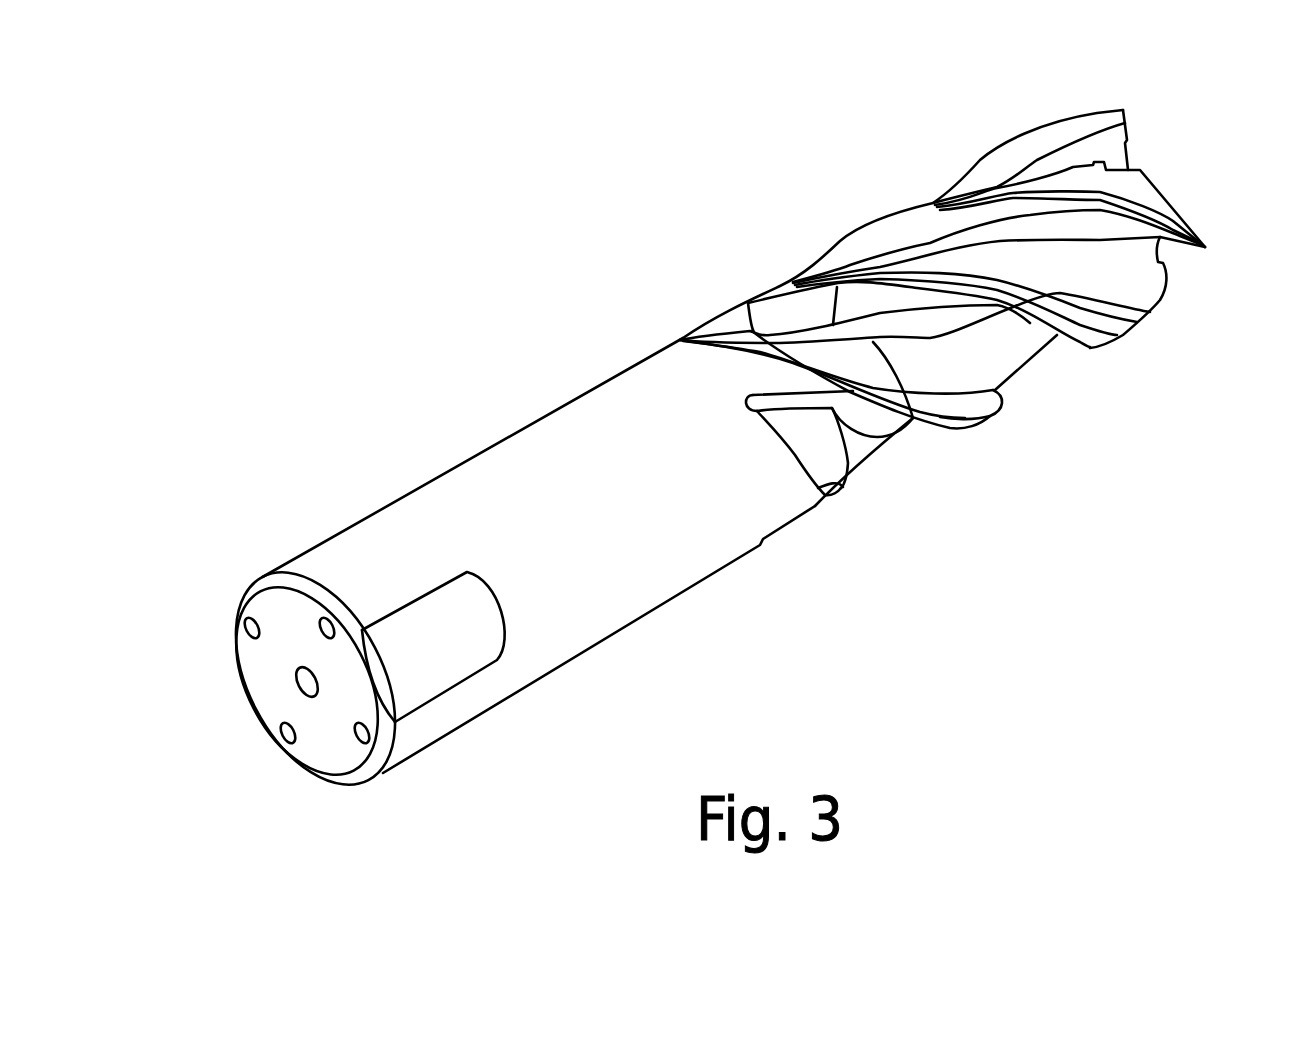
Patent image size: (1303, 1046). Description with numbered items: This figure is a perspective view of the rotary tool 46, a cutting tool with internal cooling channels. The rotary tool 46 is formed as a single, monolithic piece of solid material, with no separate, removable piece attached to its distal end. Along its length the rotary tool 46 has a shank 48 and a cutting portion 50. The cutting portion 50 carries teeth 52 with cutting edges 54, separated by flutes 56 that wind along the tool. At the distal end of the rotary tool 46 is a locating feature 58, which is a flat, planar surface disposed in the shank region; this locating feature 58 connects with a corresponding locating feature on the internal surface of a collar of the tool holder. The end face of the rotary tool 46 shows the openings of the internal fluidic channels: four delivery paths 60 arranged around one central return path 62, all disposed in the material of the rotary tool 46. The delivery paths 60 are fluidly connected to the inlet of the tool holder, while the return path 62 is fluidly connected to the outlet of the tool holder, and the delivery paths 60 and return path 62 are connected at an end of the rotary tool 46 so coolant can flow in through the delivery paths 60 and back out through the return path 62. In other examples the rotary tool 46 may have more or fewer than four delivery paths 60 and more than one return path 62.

The rotary tool 46 is at (470, 320).
The shank 48 is at (380, 778).
The cutting portion 50 is at (1105, 74).
The teeth 52 is at (960, 412).
The cutting edges 54 is at (1100, 327).
The flutes 56 is at (1133, 278).
The locating feature 58 is at (423, 617).
The delivery paths 60 is at (320, 628).
The return path 62 is at (300, 688).